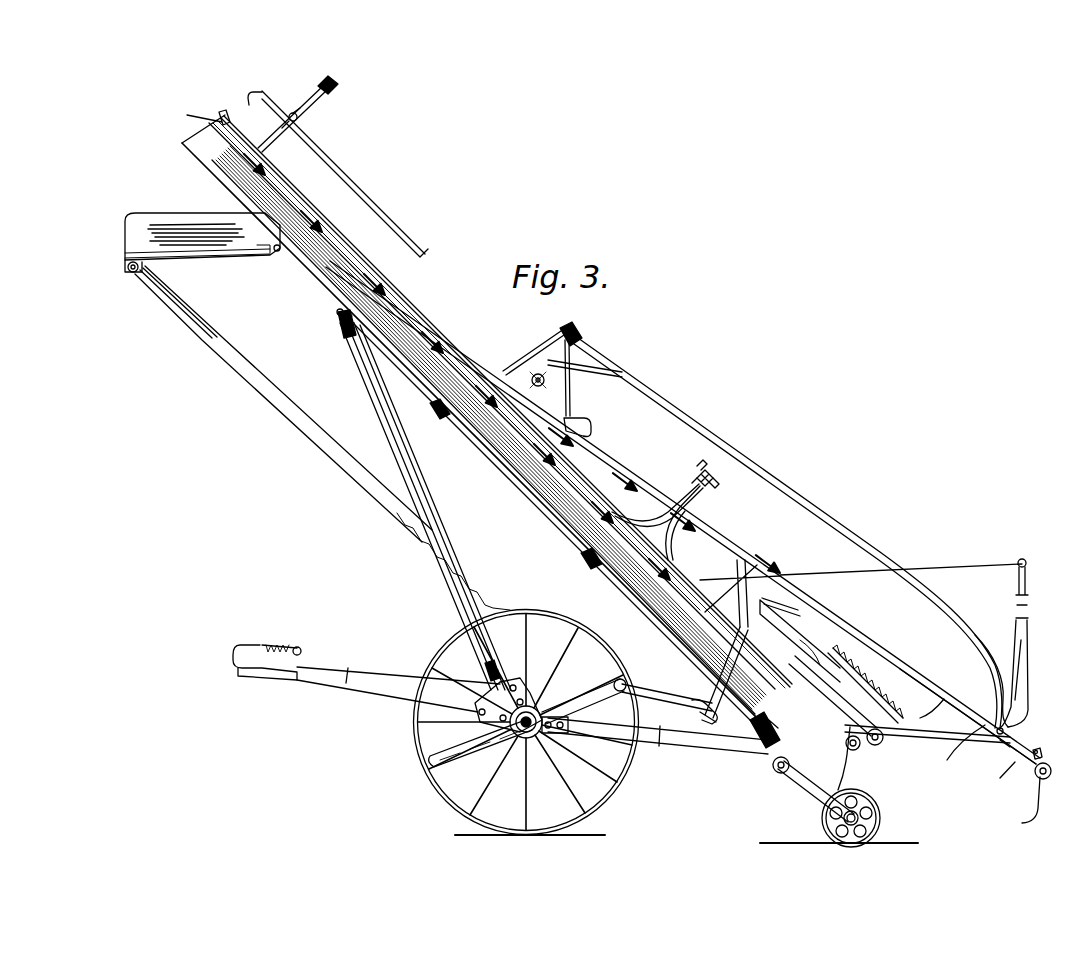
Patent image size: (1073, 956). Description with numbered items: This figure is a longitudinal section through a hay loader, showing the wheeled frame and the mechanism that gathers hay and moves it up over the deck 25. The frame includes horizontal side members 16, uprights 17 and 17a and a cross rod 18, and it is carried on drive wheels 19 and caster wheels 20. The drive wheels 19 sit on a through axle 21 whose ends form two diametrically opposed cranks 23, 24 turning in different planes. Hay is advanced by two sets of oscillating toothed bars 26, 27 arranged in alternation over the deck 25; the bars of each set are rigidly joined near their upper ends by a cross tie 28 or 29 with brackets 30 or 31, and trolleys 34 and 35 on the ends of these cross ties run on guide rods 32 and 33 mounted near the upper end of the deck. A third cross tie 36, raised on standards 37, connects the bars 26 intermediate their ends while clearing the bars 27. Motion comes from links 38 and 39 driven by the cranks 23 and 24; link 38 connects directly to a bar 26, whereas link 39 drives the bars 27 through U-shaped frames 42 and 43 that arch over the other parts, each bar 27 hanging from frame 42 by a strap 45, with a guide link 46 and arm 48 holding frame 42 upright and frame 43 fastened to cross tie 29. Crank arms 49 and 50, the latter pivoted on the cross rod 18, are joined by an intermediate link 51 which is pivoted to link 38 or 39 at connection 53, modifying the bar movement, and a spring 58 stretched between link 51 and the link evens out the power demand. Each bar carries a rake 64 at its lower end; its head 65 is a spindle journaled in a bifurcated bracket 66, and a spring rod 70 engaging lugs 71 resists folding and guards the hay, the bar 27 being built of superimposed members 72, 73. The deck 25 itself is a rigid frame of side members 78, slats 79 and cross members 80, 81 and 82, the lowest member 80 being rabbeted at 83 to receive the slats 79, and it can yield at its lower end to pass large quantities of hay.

The horizontal side member 16 is at (660, 740).
The upright 17 is at (458, 545).
The upright 17a is at (710, 694).
The cross rod 18 is at (778, 773).
The drive wheel 19 is at (433, 657).
The caster wheel 20 is at (882, 824).
The axle 21 is at (532, 702).
The crank 23 is at (432, 763).
The crank 24 is at (620, 692).
The deck 25 is at (563, 533).
The oscillating toothed bar 26 is at (640, 597).
The oscillating toothed bar 27 is at (845, 621).
The cross tie 28 is at (340, 86).
The cross tie 29 is at (565, 337).
The bracket 30 is at (278, 143).
The bracket 31 is at (552, 362).
The guide rod 32 is at (425, 262).
The guide rod 33 is at (593, 428).
The trolley 34 is at (298, 117).
The trolley 35 is at (532, 374).
The cross tie 36 is at (712, 488).
The standard 37 is at (710, 514).
The link 38 is at (560, 750).
The link 39 is at (657, 690).
The U-shaped frame 42 is at (1029, 657).
The U-shaped frame 43 is at (848, 527).
The strap 45 is at (1003, 659).
The guide link 46 is at (901, 558).
The arm 48 is at (1026, 578).
The crank arm 49 is at (723, 590).
The crank arm 50 is at (840, 697).
The link 51 is at (810, 652).
The pivotal connection 53 is at (884, 739).
The spring 58 is at (891, 713).
The rake 64 is at (846, 778).
The head 65 is at (861, 746).
The bifurcated bracket 66 is at (1000, 778).
The spring 70 is at (965, 750).
The lug 71 is at (1034, 758).
The member 72 is at (930, 712).
The member 73 is at (955, 710).
The side member 78 is at (338, 290).
The slat 79 is at (313, 273).
The cross member 80 is at (757, 748).
The cross member 81 is at (592, 562).
The cross member 82 is at (447, 418).
The rabbet 83 is at (750, 728).